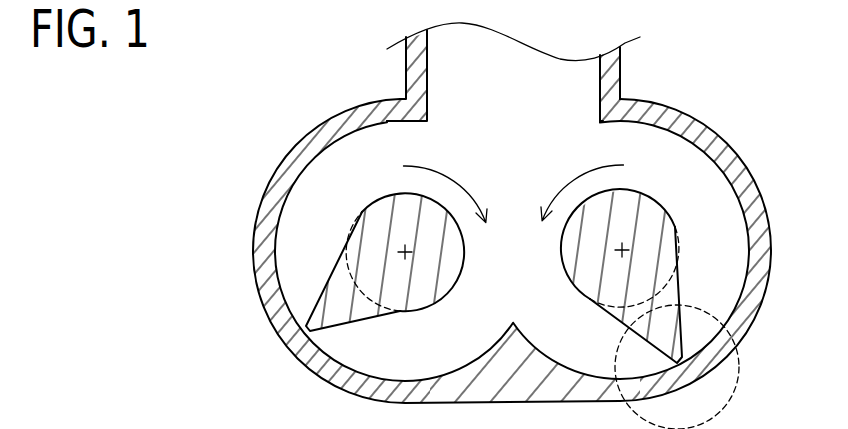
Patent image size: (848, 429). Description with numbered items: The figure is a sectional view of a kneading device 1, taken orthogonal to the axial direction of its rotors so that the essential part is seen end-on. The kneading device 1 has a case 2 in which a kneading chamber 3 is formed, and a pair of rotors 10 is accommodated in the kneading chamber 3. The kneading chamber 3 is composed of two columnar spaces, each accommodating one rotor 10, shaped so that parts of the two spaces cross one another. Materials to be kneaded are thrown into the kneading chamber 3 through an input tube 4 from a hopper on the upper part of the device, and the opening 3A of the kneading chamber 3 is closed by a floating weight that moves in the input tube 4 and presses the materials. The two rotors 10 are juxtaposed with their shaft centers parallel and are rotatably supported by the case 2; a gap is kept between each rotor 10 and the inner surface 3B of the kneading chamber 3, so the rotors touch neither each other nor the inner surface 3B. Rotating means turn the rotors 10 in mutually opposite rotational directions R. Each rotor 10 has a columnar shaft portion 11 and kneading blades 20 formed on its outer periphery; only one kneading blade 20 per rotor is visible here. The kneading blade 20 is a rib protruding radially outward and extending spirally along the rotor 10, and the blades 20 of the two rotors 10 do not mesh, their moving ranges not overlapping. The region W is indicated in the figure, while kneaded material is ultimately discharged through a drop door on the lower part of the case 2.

The kneading device 1 is at (288, 123).
The case 2 is at (316, 358).
The kneading chamber 3 is at (370, 173).
The opening 3A is at (530, 123).
The inner surface 3B is at (686, 133).
The input tube 4 is at (418, 70).
The rotor 10 is at (373, 223).
The shaft portion 11 is at (370, 235).
The kneading blade 20 is at (328, 302).
The clearance region W is at (737, 388).
The rotational direction R is at (514, 184).